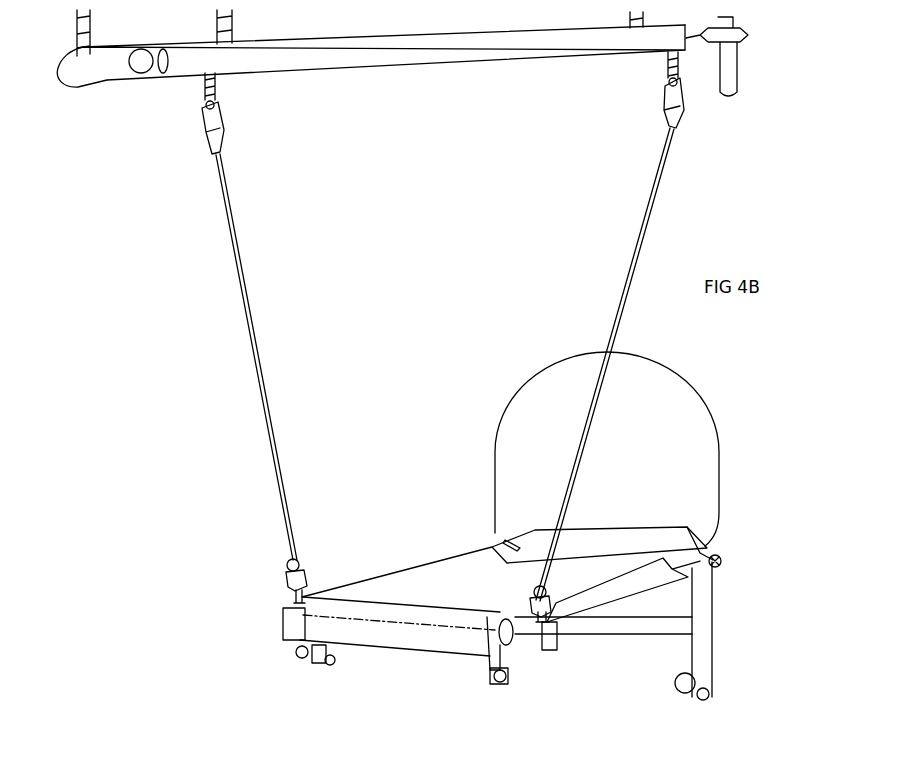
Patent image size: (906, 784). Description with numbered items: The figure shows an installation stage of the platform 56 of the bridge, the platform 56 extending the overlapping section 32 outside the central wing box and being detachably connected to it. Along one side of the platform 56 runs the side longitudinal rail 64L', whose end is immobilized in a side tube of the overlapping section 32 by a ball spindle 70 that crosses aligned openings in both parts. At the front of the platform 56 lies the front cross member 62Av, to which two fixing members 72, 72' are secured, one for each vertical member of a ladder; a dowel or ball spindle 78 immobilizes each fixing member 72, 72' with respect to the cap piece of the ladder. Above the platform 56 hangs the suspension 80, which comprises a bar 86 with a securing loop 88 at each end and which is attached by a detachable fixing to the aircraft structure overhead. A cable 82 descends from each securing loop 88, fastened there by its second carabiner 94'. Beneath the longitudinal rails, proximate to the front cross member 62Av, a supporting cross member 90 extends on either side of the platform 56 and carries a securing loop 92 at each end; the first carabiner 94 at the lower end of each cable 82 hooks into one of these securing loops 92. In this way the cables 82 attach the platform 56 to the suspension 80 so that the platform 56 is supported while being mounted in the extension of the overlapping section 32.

The suspension 80 is at (352, 87).
The bar 86 is at (443, 55).
The securing loop 88 is at (204, 80).
The second carabiner 94' is at (446, 116).
The cable 82 is at (243, 323).
The first carabiner 94 is at (388, 578).
The securing loop 92 is at (290, 597).
The supporting cross member 90 is at (548, 652).
The platform 56 is at (420, 576).
The overlapping section 32 is at (515, 547).
The front cross member 62Av is at (497, 660).
The side longitudinal rail 64L' is at (645, 629).
The ball spindle 70 is at (722, 558).
The ball spindle 78 is at (288, 655).
The fixing member 72 is at (472, 698).
The fixing member 72' is at (324, 690).